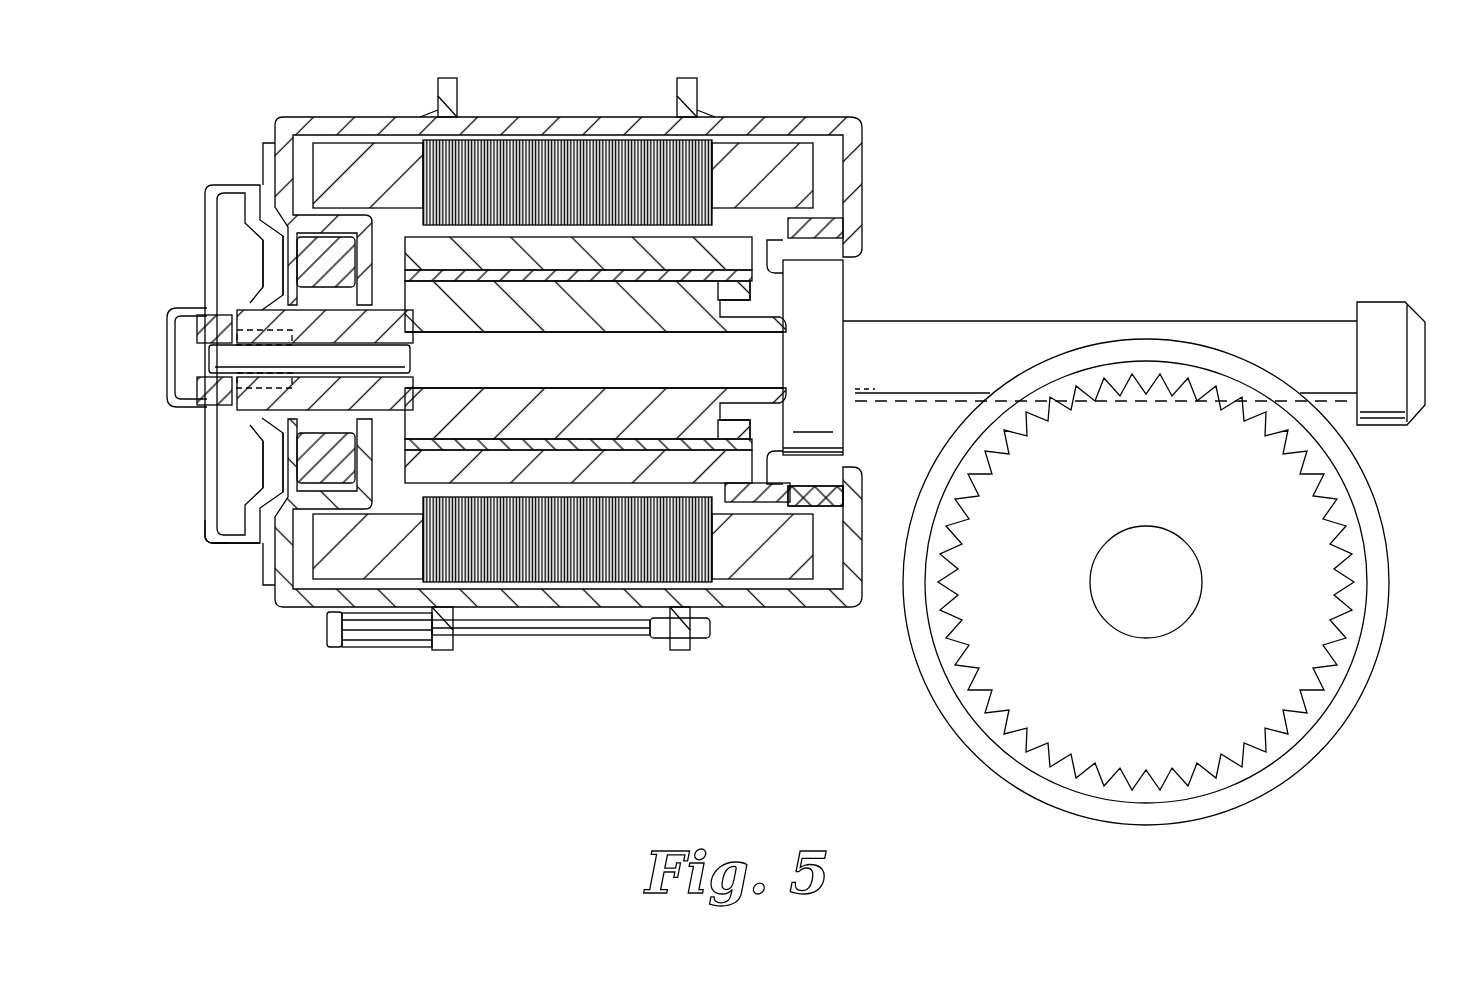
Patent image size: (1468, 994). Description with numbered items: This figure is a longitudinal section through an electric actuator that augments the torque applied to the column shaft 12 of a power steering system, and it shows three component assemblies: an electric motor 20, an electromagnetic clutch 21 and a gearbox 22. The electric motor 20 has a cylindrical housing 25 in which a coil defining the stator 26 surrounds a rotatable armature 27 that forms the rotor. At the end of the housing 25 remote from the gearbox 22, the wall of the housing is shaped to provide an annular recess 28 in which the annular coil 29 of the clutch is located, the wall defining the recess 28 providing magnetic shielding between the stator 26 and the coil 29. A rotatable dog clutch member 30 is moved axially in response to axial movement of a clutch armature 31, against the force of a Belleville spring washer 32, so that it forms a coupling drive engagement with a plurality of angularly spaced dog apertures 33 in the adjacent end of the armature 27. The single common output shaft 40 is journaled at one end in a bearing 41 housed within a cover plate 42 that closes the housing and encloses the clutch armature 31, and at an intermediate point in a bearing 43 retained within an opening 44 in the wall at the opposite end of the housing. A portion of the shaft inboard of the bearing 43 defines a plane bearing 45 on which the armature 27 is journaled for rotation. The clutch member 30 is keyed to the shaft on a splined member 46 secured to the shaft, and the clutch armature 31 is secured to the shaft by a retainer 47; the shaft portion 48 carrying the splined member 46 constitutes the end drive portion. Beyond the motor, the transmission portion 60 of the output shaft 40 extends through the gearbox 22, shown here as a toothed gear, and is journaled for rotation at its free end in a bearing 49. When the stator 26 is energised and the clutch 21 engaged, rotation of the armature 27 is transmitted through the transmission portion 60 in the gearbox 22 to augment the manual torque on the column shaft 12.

The column shaft 12 is at (1115, 615).
The electric motor 20 is at (548, 185).
The electromagnetic clutch 21 is at (268, 192).
The gearbox 22 is at (1183, 397).
The housing 25 is at (800, 125).
The stator 26 is at (738, 160).
The armature 27 is at (697, 273).
The annular recess 28 is at (328, 250).
The annular coil 29 is at (330, 480).
The dog clutch member 30 is at (323, 425).
The clutch armature 31 is at (273, 265).
The spring washer 32 is at (417, 383).
The dog apertures 33 is at (413, 290).
The output shaft 40 is at (985, 345).
The bearing 41 is at (245, 385).
The cover plate 42 is at (225, 542).
The bearing 43 is at (817, 295).
The opening 44 is at (823, 463).
The plane bearing 45 is at (563, 387).
The splined member 46 is at (297, 415).
The retainer 47 is at (203, 292).
The shaft portion 48 is at (215, 398).
The bearing 49 is at (1380, 310).
The transmission portion 60 is at (1075, 330).